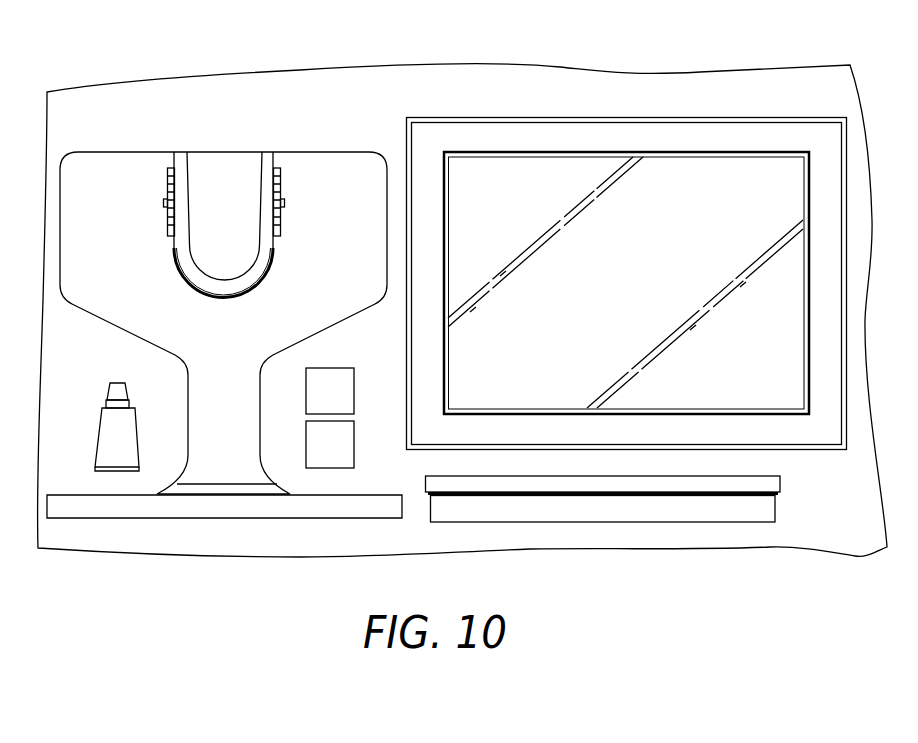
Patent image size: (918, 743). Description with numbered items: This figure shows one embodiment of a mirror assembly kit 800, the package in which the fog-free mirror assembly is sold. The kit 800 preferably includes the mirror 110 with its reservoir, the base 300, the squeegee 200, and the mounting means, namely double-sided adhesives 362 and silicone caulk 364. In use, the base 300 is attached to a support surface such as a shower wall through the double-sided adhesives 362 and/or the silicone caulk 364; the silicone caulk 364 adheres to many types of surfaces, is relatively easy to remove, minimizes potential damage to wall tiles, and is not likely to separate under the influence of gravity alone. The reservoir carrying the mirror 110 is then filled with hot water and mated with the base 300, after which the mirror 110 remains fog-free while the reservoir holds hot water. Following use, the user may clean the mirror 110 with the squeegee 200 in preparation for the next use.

The kit 800 is at (363, 65).
The base 300 is at (332, 165).
The mirror 110 is at (498, 175).
The double-sided adhesives 362 is at (345, 442).
The silicone caulk 364 is at (105, 447).
The squeegee 200 is at (772, 483).